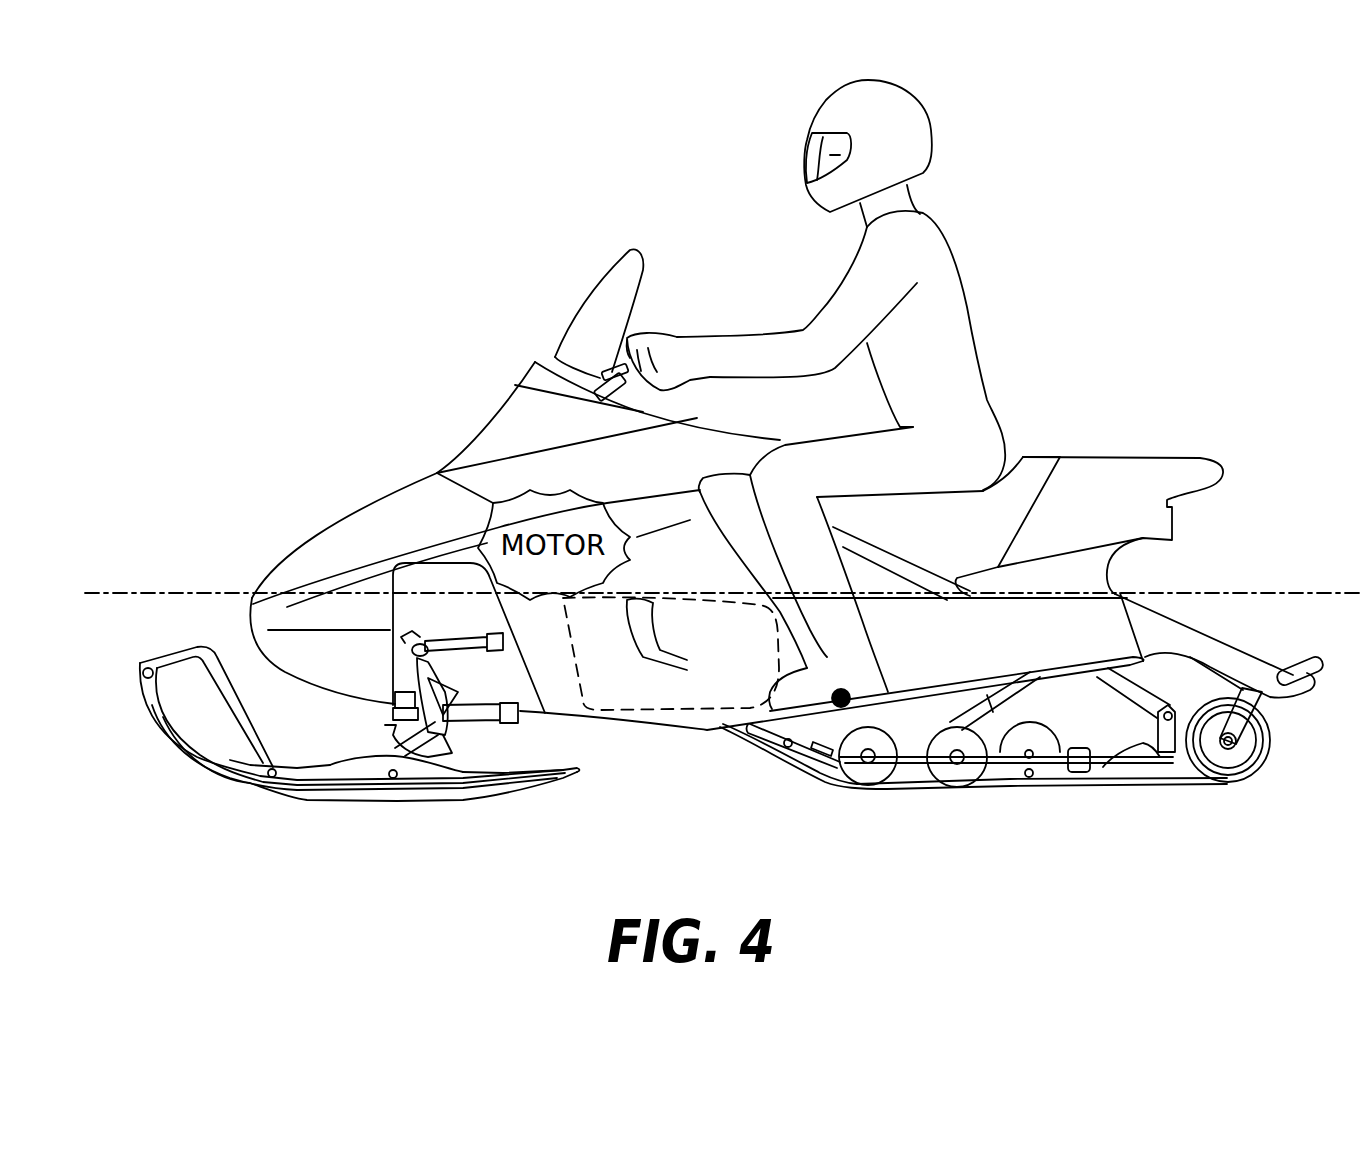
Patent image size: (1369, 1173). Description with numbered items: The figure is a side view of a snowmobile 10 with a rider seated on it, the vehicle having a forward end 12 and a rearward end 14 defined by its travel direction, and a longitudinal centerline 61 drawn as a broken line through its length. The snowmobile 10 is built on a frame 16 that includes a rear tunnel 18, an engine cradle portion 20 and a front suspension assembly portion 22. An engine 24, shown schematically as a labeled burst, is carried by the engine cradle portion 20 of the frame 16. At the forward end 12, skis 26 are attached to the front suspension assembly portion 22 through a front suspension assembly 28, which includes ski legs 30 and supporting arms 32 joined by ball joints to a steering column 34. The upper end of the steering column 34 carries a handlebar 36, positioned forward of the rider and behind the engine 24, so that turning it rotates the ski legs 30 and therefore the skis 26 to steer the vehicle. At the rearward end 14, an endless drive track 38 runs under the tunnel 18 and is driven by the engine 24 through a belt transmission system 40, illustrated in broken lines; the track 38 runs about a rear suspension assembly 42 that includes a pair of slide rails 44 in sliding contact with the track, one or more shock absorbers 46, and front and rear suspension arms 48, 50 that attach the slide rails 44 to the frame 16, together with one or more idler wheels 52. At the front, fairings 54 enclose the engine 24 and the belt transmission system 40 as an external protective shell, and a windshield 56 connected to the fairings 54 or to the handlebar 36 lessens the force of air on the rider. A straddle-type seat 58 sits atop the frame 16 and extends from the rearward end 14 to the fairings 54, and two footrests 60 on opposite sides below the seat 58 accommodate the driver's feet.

The snowmobile 10 is at (456, 370).
The forward end 12 is at (228, 502).
The rearward end 14 is at (1137, 424).
The frame 16 is at (1133, 591).
The rear tunnel 18 is at (922, 650).
The engine cradle portion 20 is at (600, 724).
The front suspension assembly portion 22 is at (395, 656).
The engine 24 is at (487, 543).
The skis 26 is at (360, 802).
The front suspension assembly 28 is at (522, 722).
The ski legs 30 is at (443, 738).
The supporting arms 32 is at (487, 721).
The steering column 34 is at (545, 372).
The handlebar 36 is at (627, 343).
The endless drive track 38 is at (828, 787).
The belt transmission system 40 is at (667, 727).
The rear suspension assembly 42 is at (995, 780).
The slide rails 44 is at (1100, 770).
The shock absorbers 46 is at (1023, 690).
The front suspension arm 48 is at (929, 777).
The rear suspension arm 50 is at (1173, 758).
The idler wheels 52 is at (1265, 757).
The fairings 54 is at (337, 528).
The windshield 56 is at (606, 275).
The straddle-type seat 58 is at (1040, 463).
The footrests 60 is at (885, 776).
The longitudinal centerline 61 is at (140, 593).